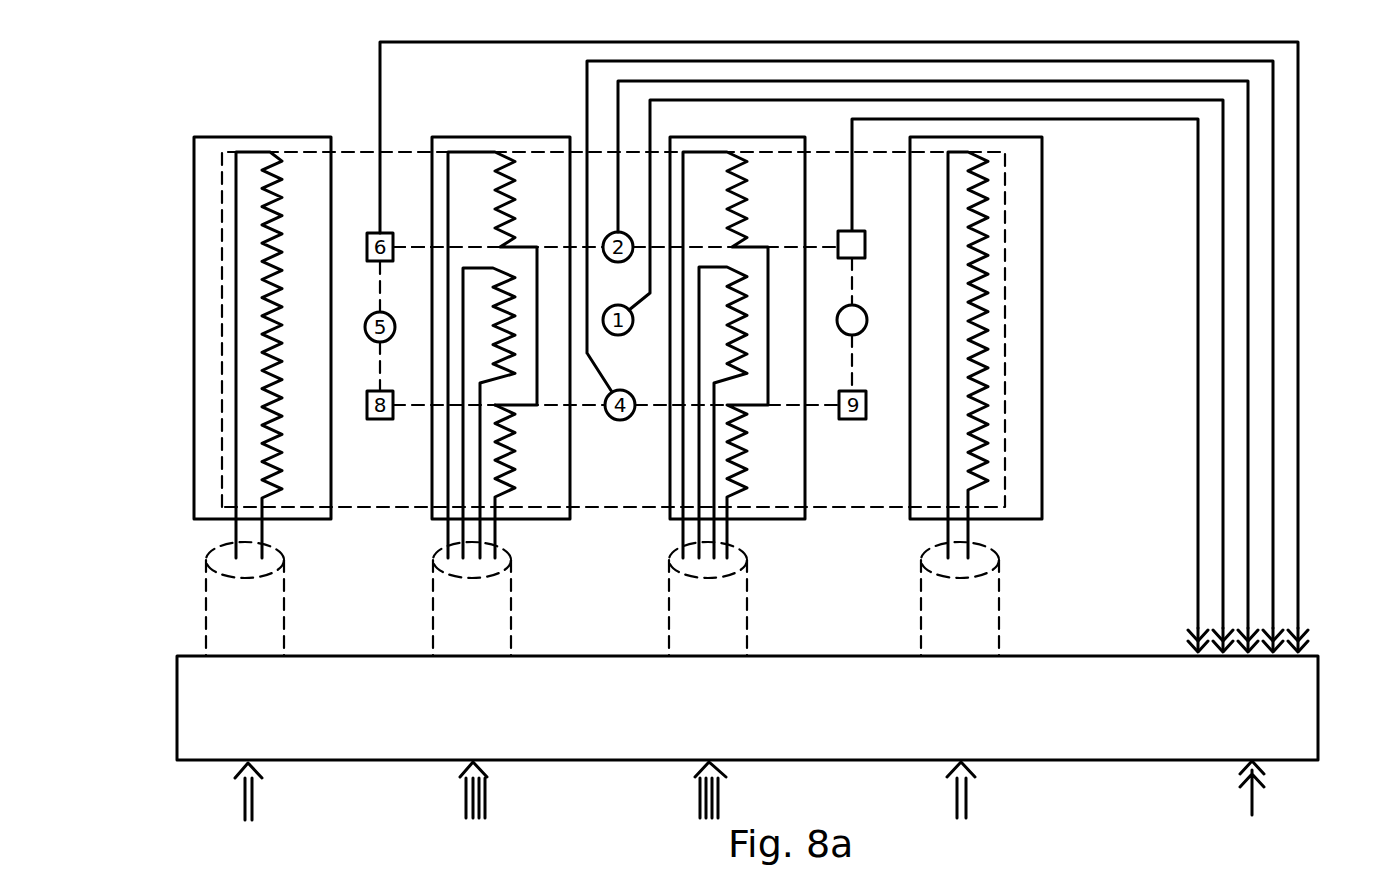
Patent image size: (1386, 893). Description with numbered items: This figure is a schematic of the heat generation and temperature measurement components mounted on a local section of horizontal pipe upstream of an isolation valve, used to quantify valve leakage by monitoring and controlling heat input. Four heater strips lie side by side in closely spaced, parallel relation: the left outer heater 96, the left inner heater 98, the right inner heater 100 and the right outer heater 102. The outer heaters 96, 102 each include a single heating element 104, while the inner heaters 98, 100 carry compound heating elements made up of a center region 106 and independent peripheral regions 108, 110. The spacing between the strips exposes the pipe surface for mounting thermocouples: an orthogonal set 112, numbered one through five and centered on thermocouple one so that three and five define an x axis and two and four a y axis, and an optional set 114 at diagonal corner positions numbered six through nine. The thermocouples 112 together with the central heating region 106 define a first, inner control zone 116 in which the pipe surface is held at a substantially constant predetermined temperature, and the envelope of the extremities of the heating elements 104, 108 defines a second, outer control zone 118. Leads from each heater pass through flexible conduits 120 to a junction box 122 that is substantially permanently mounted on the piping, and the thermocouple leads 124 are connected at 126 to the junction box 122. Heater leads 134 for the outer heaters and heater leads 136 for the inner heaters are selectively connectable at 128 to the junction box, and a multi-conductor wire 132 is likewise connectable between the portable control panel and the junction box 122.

The left outer heater 96 is at (194, 265).
The left inner heater 98 is at (454, 137).
The right inner heater 100 is at (744, 131).
The right outer heater 102 is at (1044, 190).
The single heating element 104 is at (263, 323).
The center region 106 is at (497, 318).
The peripheral region 108 is at (502, 152).
The peripheral region 110 is at (502, 490).
The orthogonal set of thermocouples 112 is at (868, 320).
The set of thermocouples 114 is at (866, 243).
The inner control zone 116 is at (417, 247).
The outer control zone 118 is at (1005, 392).
The flexible conduits 120 is at (207, 597).
The junction box 122 is at (177, 683).
The thermocouple leads 124 is at (380, 68).
The thermocouple lead connection 126 is at (1307, 633).
The heater lead connection 128 is at (254, 773).
The multi-conductor wire 132 is at (1250, 800).
The outer heater leads 134 is at (253, 806).
The inner heater leads 136 is at (487, 805).